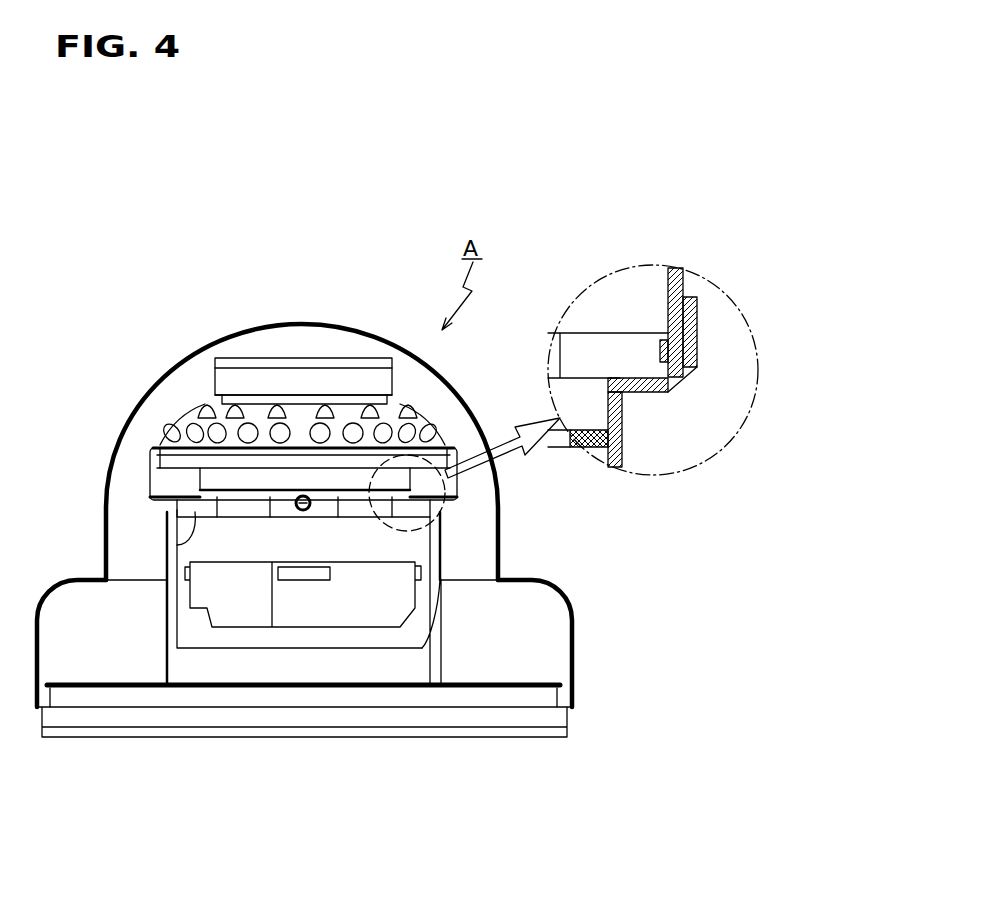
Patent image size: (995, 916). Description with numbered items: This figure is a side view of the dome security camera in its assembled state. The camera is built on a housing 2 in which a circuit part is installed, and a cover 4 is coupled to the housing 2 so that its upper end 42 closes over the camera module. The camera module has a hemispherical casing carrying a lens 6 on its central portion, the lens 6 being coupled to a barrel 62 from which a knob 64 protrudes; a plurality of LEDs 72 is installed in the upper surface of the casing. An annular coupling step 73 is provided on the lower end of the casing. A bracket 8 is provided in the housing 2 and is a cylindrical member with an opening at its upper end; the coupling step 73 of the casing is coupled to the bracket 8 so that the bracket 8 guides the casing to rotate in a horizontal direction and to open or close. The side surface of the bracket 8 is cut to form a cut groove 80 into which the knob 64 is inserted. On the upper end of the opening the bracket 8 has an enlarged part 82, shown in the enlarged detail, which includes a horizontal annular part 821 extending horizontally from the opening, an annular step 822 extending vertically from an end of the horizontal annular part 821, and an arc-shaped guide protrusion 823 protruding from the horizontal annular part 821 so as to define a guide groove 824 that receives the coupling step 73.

The housing 2 is at (83, 726).
The cover 4 is at (384, 343).
The lens 6 is at (308, 358).
The bracket 8 is at (193, 513).
The upper end 42 is at (572, 646).
The barrel 62 is at (355, 390).
The knob 64 is at (304, 512).
The LEDs 72 is at (287, 432).
The coupling step 73 is at (207, 480).
The cut groove 80 is at (240, 483).
The enlarged part 82 is at (720, 351).
The horizontal annular part 821 is at (645, 393).
The annular step 822 is at (692, 320).
The guide protrusion 823 is at (660, 352).
The guide groove 824 is at (688, 365).